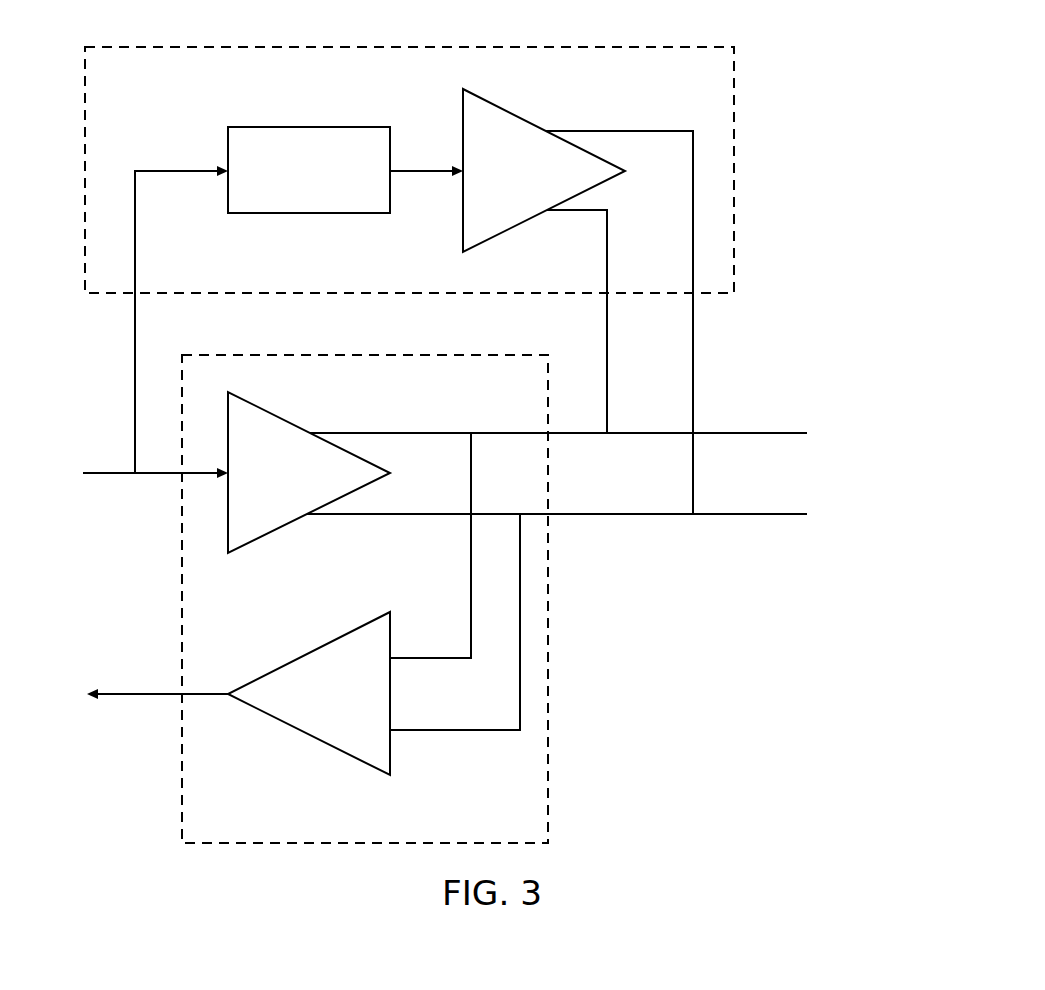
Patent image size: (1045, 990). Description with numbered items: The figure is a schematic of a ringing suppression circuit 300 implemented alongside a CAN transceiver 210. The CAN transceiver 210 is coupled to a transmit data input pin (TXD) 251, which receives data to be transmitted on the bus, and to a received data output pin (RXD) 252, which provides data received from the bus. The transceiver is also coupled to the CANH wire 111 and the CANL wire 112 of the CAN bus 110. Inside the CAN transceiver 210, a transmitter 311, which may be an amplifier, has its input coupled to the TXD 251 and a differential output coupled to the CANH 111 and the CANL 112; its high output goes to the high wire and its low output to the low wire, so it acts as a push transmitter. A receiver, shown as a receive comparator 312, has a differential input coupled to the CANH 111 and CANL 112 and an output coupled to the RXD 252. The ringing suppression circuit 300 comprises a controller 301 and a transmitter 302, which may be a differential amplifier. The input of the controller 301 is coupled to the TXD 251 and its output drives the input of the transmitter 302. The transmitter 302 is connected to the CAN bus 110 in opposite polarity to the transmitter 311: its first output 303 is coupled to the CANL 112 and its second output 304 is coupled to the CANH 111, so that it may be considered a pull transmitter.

The CAN bus 110 is at (877, 480).
The CANH wire 111 is at (752, 433).
The CANL wire 112 is at (752, 515).
The CAN transceiver 210 is at (550, 730).
The transmit data input pin 251 is at (105, 477).
The received data output pin 252 is at (118, 697).
The ringing suppression circuit 300 is at (735, 212).
The controller 301 is at (310, 127).
The transmitter 302 is at (480, 113).
The first output 303 is at (700, 343).
The second output 304 is at (610, 392).
The transmitter 311 is at (257, 522).
The receive comparator 312 is at (332, 720).